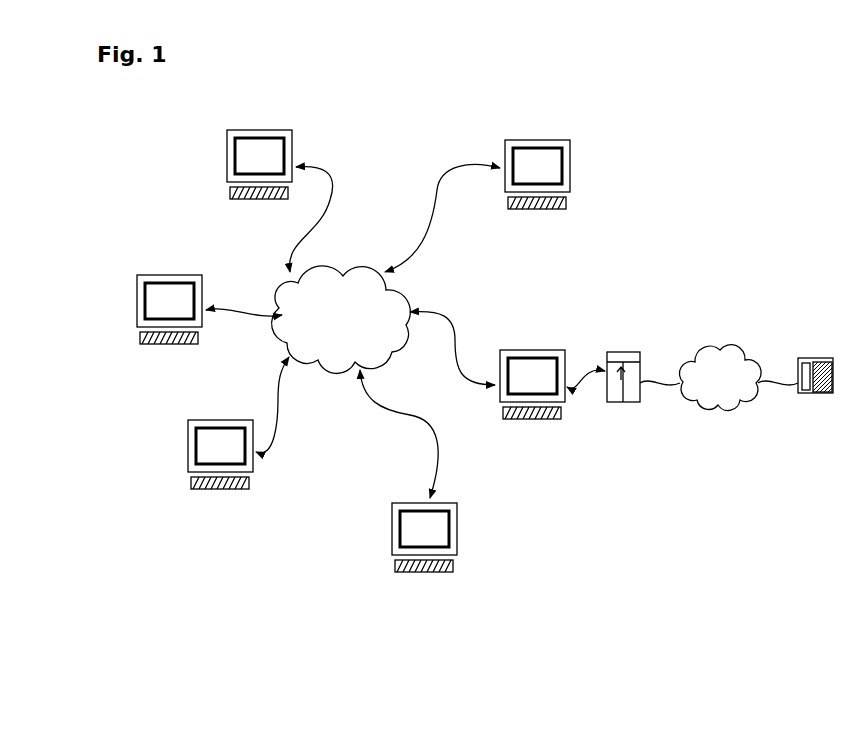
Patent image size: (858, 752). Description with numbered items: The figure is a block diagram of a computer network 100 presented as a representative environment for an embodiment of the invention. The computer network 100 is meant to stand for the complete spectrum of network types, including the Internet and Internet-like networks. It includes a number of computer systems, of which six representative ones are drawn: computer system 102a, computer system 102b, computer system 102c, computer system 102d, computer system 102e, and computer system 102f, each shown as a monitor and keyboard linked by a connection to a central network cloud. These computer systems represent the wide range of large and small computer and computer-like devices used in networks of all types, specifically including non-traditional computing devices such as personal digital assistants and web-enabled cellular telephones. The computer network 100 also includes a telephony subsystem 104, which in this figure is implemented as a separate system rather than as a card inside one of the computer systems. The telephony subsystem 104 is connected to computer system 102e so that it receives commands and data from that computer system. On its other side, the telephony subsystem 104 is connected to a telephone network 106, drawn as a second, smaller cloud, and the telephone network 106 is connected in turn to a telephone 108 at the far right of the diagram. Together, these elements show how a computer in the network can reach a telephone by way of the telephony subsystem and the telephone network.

The computer network 100 is at (377, 163).
The computer system 102a is at (227, 163).
The computer system 102b is at (137, 305).
The computer system 102c is at (188, 458).
The computer system 102d is at (392, 538).
The computer system 102e is at (533, 350).
The computer system 102f is at (572, 165).
The telephony subsystem 104 is at (625, 352).
The telephone network 106 is at (732, 345).
The telephone 108 is at (815, 358).